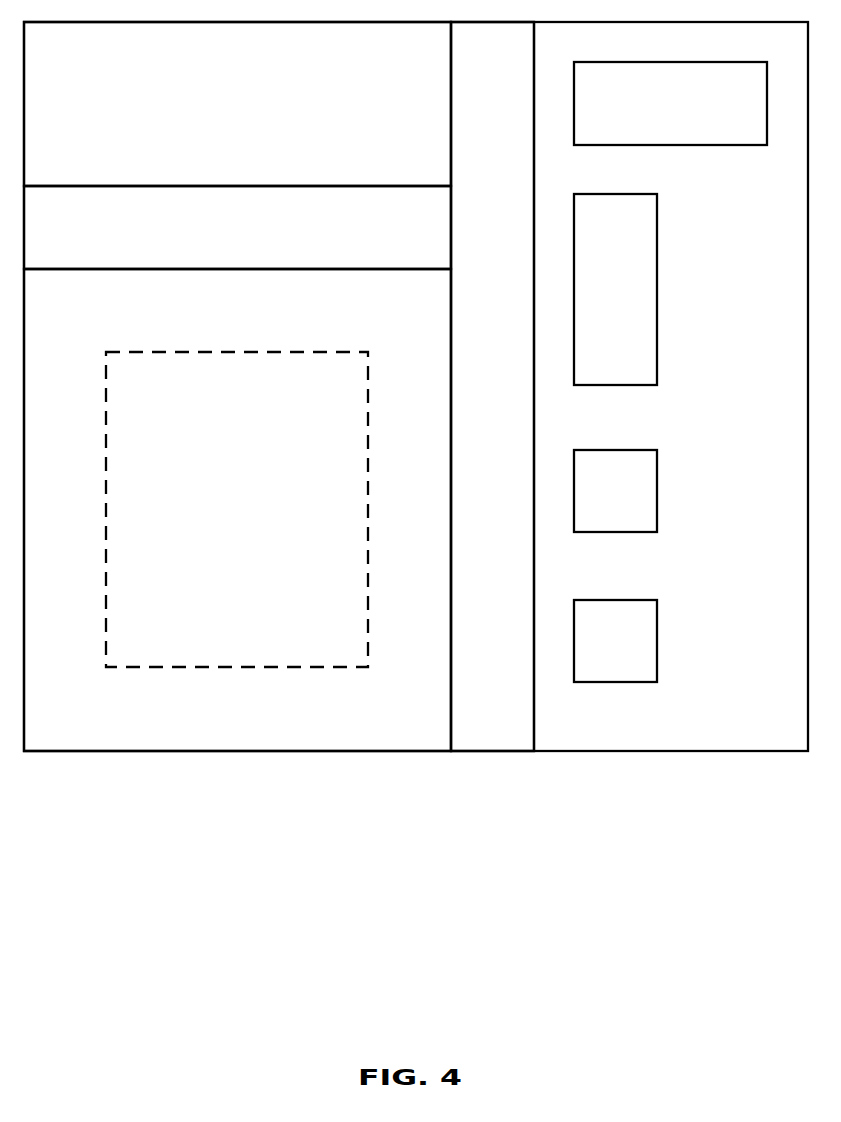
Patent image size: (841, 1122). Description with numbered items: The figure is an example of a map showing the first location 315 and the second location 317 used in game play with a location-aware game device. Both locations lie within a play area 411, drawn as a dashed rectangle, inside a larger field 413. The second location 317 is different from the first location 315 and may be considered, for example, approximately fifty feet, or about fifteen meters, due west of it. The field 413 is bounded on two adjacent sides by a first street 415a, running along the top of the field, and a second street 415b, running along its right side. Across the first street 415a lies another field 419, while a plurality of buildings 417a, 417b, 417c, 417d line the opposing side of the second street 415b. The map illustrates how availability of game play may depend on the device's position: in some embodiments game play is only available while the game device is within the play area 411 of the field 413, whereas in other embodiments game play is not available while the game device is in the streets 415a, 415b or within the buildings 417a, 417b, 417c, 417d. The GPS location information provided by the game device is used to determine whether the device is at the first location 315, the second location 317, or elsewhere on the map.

The another field 419 is at (260, 117).
The first street 415a is at (308, 260).
The second street 415b is at (523, 382).
The field 413 is at (103, 327).
The play area 411 is at (226, 350).
The second location 317 is at (171, 540).
The first location 315 is at (282, 540).
The building 417a is at (677, 146).
The building 417b is at (657, 290).
The building 417c is at (657, 492).
The building 417d is at (657, 641).